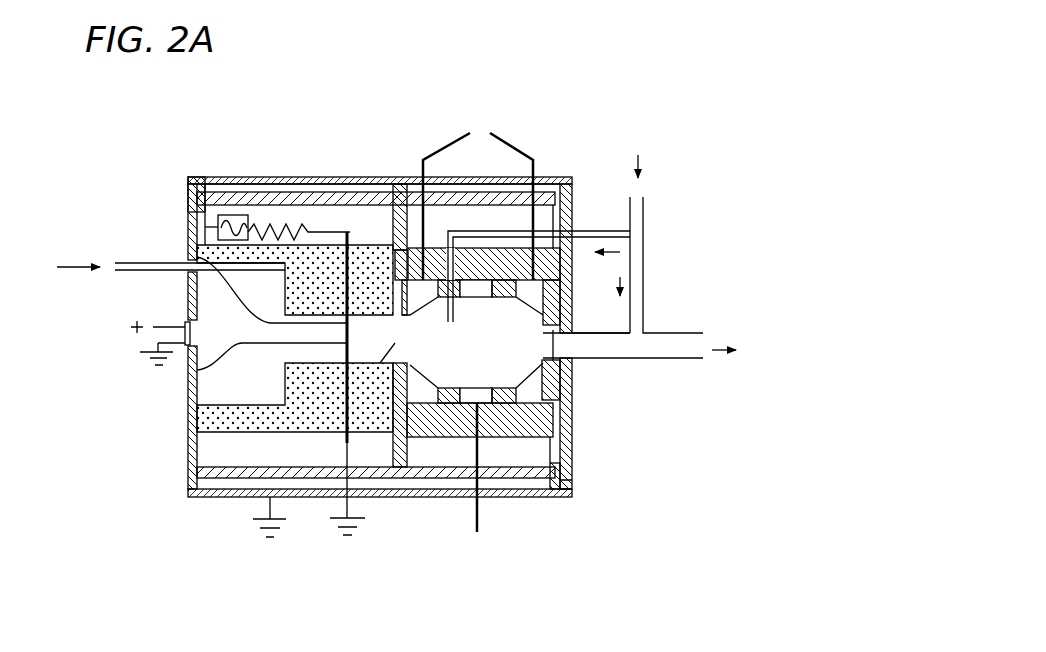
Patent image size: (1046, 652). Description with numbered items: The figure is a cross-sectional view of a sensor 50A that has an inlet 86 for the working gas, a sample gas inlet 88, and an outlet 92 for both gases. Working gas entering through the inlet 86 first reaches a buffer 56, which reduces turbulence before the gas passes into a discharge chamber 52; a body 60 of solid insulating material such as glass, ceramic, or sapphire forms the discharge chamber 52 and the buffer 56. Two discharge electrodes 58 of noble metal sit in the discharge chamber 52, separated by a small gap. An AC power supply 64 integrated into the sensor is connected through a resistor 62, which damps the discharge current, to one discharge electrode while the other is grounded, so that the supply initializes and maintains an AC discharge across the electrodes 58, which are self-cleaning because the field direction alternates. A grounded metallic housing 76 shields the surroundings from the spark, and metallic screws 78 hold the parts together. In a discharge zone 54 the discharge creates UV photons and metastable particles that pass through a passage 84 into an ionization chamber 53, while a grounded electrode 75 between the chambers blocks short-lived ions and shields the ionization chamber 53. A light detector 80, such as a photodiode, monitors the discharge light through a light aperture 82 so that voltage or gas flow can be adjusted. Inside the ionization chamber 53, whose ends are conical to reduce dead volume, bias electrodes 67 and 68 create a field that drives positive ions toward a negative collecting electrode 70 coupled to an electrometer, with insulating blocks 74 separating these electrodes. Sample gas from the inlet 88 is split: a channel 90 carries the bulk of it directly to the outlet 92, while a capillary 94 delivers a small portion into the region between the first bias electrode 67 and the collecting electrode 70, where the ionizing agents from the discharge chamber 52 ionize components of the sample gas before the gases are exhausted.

The sensor 50A is at (700, 116).
The discharge chamber 52 is at (200, 420).
The ionization chamber 53 is at (460, 358).
The discharge zone 54 is at (287, 375).
The buffer 56 is at (220, 313).
The discharge electrodes 58 is at (215, 247).
The body 60 is at (313, 413).
The resistor 62 is at (270, 192).
The AC power supply 64 is at (183, 213).
The bias electrode 67 is at (562, 457).
The bias electrode 68 is at (490, 320).
The collecting electrode 70 is at (550, 370).
The insulating blocks 74 is at (452, 437).
The grounded electrode 75 is at (363, 217).
The metallic housing 76 is at (182, 447).
The metallic screws 78 is at (320, 190).
The light detector 80 is at (187, 327).
The light aperture 82 is at (310, 353).
The passage 84 is at (380, 363).
The inlet 86 is at (142, 262).
The sample gas inlet 88 is at (643, 207).
The channel 90 is at (573, 267).
The outlet 92 is at (685, 358).
The capillary 94 is at (550, 405).